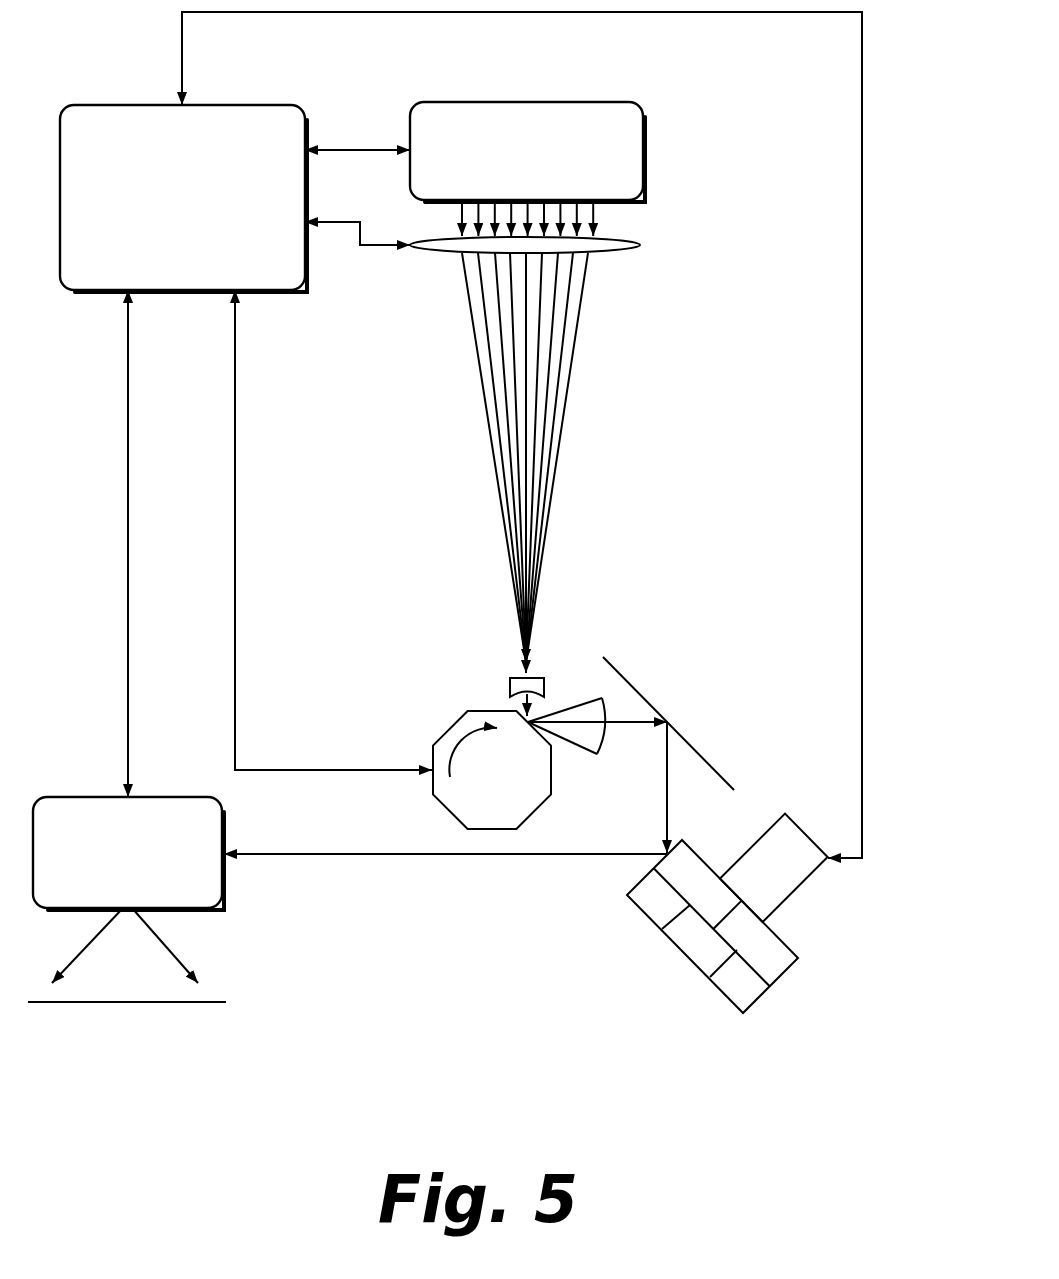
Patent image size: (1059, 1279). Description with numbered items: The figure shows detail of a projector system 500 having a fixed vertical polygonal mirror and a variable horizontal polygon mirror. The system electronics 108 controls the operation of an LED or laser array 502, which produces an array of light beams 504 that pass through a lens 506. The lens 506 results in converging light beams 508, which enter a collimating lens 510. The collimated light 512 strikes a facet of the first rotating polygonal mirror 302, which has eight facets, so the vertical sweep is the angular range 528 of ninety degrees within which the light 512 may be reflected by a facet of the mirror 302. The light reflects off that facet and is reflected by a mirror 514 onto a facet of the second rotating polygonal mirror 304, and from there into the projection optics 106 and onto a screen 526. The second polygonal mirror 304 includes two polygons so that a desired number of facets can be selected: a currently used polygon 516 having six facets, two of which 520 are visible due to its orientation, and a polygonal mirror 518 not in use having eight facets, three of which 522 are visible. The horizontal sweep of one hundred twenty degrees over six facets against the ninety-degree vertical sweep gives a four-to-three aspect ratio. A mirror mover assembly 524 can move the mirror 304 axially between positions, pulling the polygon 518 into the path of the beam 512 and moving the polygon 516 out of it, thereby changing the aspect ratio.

The projector system 500 is at (128, 60).
The system electronics 108 is at (134, 138).
The LED or laser array 502 is at (485, 131).
The array of light beams 504 is at (608, 220).
The lens 506 is at (648, 253).
The converging light beams 508 is at (583, 370).
The collimating lens 510 is at (510, 678).
The first rotating polygonal mirror 302 is at (433, 745).
The angular range 528 is at (606, 758).
The mirror 514 is at (633, 682).
The collimated light 512 is at (667, 812).
The currently used polygon 516 is at (770, 973).
The polygonal mirror not in use 518 is at (758, 1000).
The visible facets of the six-facet polygon 520 is at (737, 927).
The visible facets of the eight-facet polygon 522 is at (647, 900).
The mirror mover assembly 524 is at (804, 848).
The second rotating polygonal mirror 304 is at (680, 1020).
The projection optics 106 is at (109, 833).
The screen 526 is at (183, 1002).